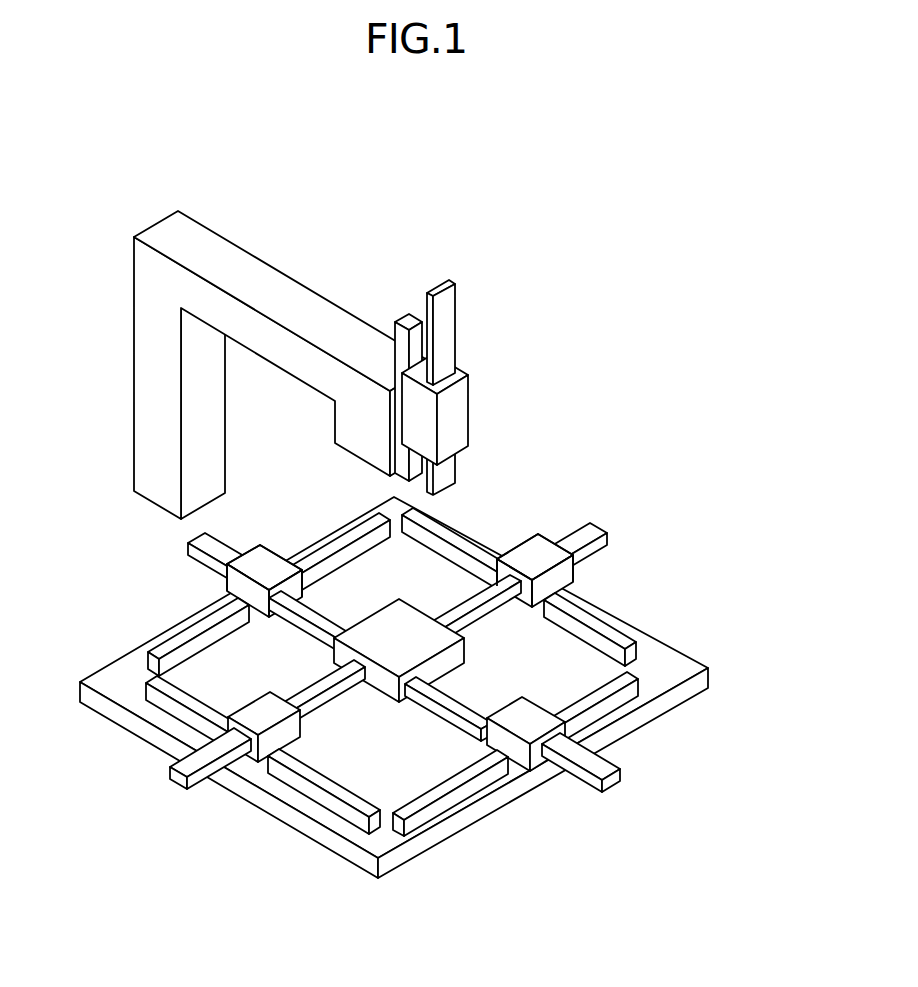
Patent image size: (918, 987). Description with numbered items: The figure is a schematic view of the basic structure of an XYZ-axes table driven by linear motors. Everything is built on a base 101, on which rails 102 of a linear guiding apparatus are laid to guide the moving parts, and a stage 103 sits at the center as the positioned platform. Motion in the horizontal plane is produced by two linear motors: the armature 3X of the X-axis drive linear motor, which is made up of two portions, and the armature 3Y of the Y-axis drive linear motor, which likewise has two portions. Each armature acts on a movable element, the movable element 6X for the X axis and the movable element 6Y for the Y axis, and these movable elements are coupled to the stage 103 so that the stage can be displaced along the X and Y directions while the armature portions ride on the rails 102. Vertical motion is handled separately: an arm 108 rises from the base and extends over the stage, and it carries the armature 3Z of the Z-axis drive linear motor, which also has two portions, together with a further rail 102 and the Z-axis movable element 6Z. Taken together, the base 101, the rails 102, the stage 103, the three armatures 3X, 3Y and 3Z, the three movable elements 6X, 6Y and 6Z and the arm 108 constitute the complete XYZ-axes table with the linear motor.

The base 101 is at (670, 680).
The rail of a linear guiding apparatus 102 is at (613, 634).
The stage 103 is at (398, 623).
The arm 108 is at (278, 352).
The armature of an X-axis drive linear motor 3X is at (200, 557).
The armature of a Y-axis drive linear motor 3Y is at (266, 728).
The armature of a Z-axis drive linear motor 3Z is at (460, 412).
The movable element 6X is at (607, 762).
The movable element 6Y is at (483, 598).
The movable element 6Z is at (442, 333).